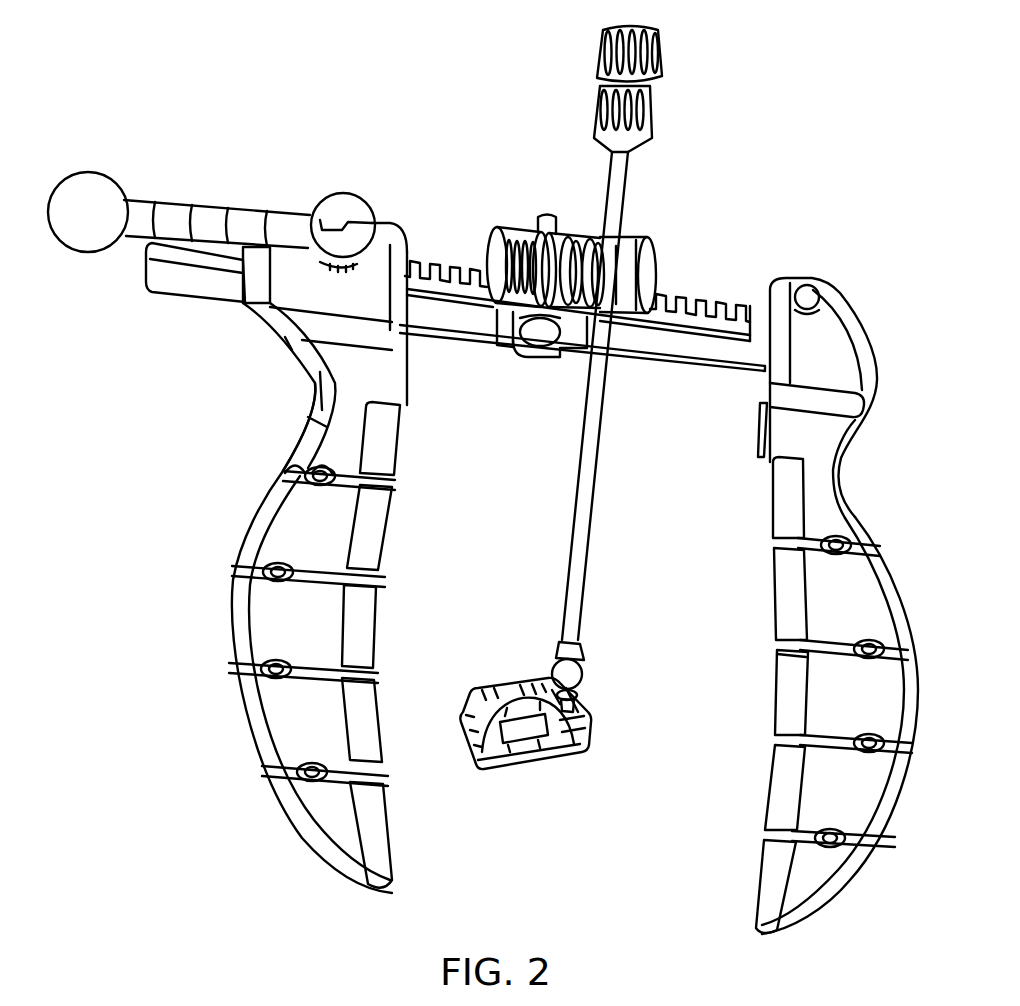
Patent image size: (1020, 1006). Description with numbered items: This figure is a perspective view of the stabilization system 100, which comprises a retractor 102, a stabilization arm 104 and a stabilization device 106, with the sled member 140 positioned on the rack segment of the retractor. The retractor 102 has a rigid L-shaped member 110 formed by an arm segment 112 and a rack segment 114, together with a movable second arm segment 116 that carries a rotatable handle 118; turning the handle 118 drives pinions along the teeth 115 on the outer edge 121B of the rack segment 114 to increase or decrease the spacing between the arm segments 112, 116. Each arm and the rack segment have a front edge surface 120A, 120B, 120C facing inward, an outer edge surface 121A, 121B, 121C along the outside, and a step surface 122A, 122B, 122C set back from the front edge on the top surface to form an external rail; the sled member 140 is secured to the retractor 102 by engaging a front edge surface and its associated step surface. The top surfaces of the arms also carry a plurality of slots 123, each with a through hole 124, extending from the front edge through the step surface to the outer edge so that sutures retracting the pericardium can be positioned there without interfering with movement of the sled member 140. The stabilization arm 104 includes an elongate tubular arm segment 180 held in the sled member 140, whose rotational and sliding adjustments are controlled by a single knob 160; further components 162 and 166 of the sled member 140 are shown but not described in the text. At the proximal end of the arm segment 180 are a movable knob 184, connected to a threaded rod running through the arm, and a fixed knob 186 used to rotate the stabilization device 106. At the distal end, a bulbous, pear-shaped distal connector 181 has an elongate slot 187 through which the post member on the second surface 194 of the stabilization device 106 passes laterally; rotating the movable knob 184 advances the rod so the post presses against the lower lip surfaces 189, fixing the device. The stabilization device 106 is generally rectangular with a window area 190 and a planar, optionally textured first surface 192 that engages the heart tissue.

The stabilization system 100 is at (424, 138).
The retractor 102 is at (859, 294).
The stabilization arm 104 is at (564, 528).
The stabilization device 106 is at (531, 774).
The L-shaped member 110 is at (866, 332).
The arm segment 112 is at (830, 690).
The rack segment 114 is at (740, 366).
The teeth 115 is at (733, 297).
The second arm segment 116 is at (353, 384).
The handle 118 is at (292, 202).
The front edge surface 120A is at (387, 532).
The front edge surface 120B is at (453, 333).
The front edge surface 120C is at (760, 510).
The outer edge surface 121A is at (226, 532).
The outer edge surface 121B is at (690, 296).
The outer edge surface 121C is at (896, 602).
The step surface 122A is at (344, 530).
The step surface 122B is at (571, 269).
The step surface 122C is at (827, 505).
The slots 123 is at (312, 440).
The through hole 124 is at (244, 577).
The sled member 140 is at (503, 345).
The knob 160 is at (492, 235).
The hub 162 is at (636, 246).
The locking tab 166 is at (576, 254).
The arm segment 180 is at (622, 186).
The distal connector 181 is at (582, 668).
The movable knob 184 is at (655, 58).
The fixed knob 186 is at (640, 128).
The slot 187 is at (584, 693).
The lower lip surfaces 189 is at (580, 702).
The window area 190 is at (517, 733).
The first surface 192 is at (572, 755).
The second surface 194 is at (483, 768).